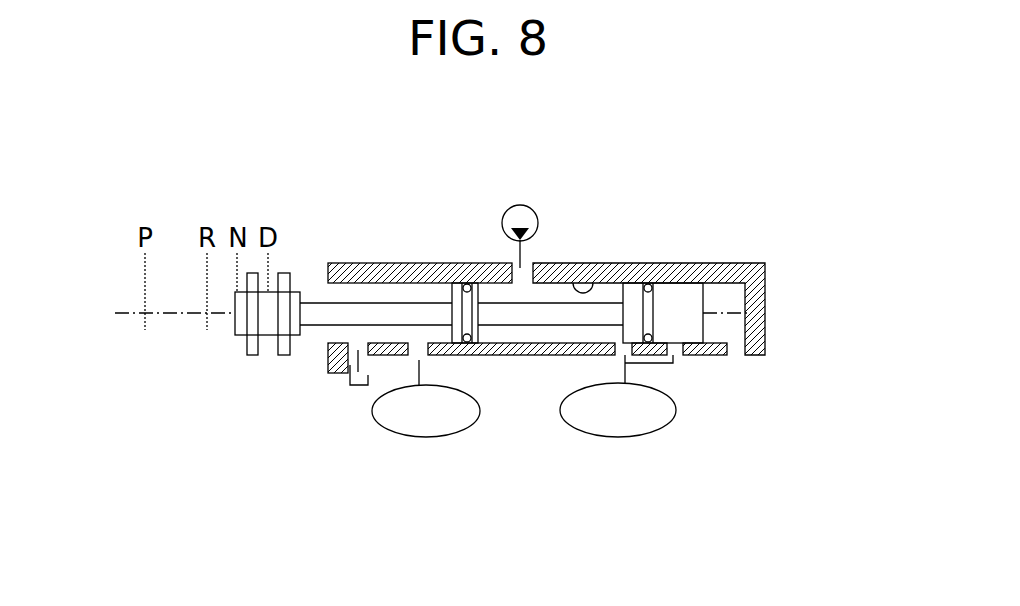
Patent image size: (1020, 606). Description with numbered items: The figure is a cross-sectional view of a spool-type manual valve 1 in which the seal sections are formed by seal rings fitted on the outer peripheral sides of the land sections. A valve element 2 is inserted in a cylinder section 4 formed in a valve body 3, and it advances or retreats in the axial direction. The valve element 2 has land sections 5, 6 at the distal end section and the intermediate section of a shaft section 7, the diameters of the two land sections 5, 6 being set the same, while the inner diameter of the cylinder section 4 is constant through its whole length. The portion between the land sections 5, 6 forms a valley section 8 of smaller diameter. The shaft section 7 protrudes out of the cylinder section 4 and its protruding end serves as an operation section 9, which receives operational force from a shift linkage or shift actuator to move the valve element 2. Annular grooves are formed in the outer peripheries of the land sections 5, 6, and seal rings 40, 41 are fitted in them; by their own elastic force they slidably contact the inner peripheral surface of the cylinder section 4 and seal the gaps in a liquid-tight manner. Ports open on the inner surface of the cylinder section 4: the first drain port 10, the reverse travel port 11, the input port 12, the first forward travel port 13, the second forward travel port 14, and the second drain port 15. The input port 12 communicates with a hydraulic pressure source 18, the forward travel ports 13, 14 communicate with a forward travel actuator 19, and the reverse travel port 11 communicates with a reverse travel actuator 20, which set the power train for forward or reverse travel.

The manual valve 1 is at (578, 251).
The valve element 2 is at (303, 352).
The valve body 3 is at (752, 280).
The cylinder section 4 is at (590, 284).
The land section 5 is at (681, 308).
The land section 6 is at (481, 345).
The shaft section 7 is at (360, 307).
The valley section 8 is at (617, 328).
The operation section 9 is at (267, 313).
The first drain port 10 is at (352, 355).
The reverse travel port 11 is at (412, 358).
The input port 12 is at (520, 265).
The first forward travel port 13 is at (617, 355).
The second forward travel port 14 is at (673, 358).
The second drain port 15 is at (737, 351).
The hydraulic pressure source 18 is at (521, 205).
The forward travel actuator 19 is at (620, 437).
The reverse travel actuator 20 is at (424, 438).
The seal ring 40 is at (650, 284).
The seal ring 41 is at (467, 345).